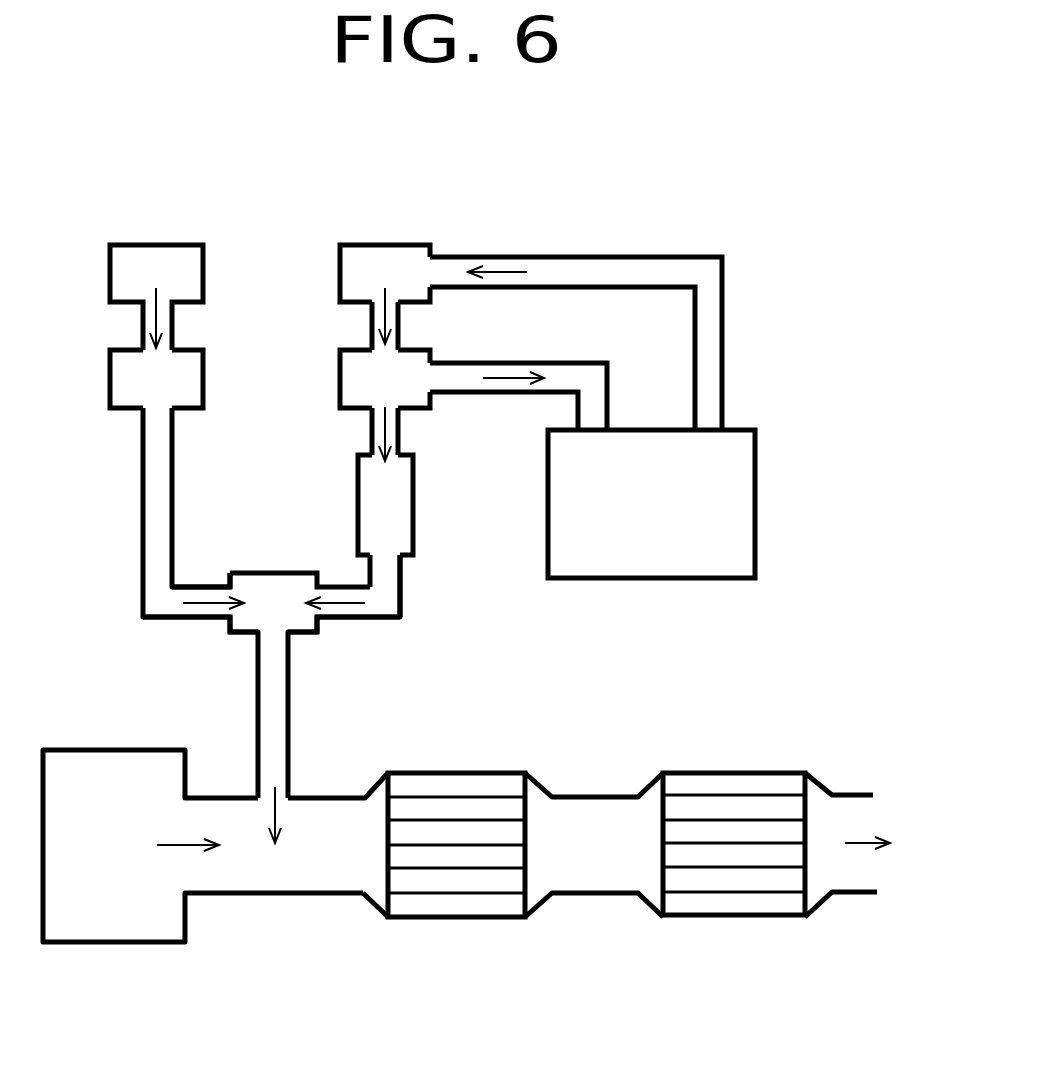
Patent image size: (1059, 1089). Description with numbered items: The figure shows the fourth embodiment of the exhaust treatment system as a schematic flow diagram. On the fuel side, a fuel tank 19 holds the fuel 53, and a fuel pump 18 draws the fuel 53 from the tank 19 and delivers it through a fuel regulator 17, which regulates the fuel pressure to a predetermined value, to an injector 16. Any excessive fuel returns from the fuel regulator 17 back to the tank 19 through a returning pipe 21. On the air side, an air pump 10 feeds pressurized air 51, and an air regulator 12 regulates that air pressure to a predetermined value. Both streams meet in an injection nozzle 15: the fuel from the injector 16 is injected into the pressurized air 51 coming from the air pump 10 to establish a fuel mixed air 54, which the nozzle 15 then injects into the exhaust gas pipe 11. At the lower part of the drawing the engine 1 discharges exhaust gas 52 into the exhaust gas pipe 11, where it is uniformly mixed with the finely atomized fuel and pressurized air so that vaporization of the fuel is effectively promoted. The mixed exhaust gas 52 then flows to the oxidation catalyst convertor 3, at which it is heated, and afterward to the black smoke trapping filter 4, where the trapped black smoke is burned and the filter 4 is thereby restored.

The engine 1 is at (83, 932).
The oxidation catalyst convertor 3 is at (470, 910).
The black smoke trapping filter 4 is at (705, 907).
The air pump 10 is at (134, 260).
The exhaust gas pipe 11 is at (293, 888).
The air regulator 12 is at (123, 400).
The injection nozzle 15 is at (250, 583).
The injector 16 is at (407, 528).
The fuel regulator 17 is at (345, 372).
The fuel pump 18 is at (362, 250).
The fuel tank 19 is at (643, 570).
The returning pipe 21 is at (503, 394).
The pressurized air 51 is at (158, 322).
The exhaust gas flow 52 is at (188, 848).
The fuel 53 is at (505, 270).
The fuel mixed air 54 is at (280, 812).